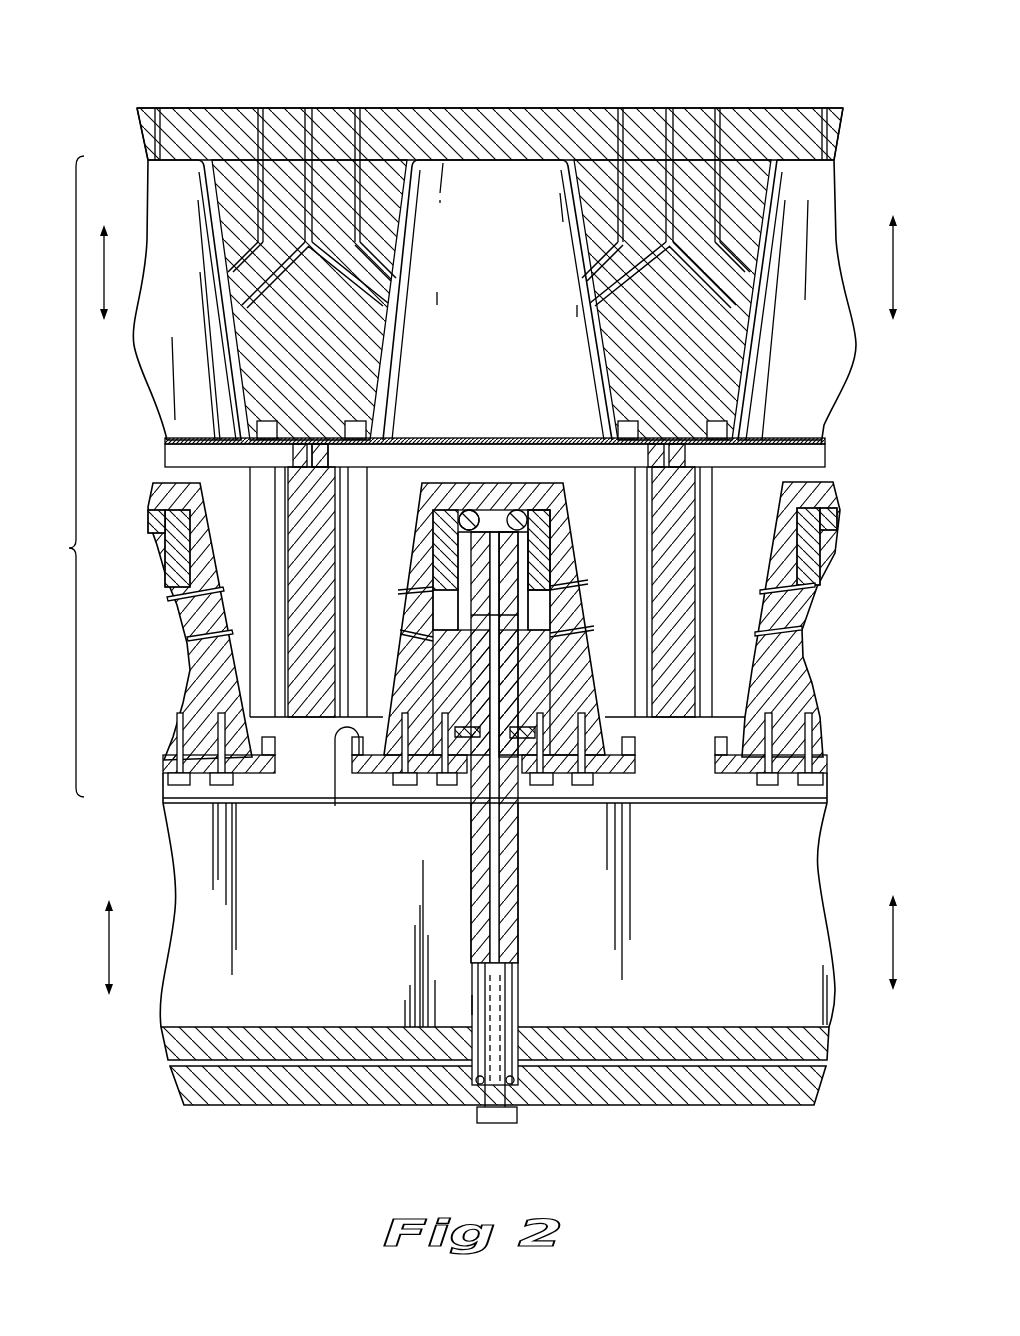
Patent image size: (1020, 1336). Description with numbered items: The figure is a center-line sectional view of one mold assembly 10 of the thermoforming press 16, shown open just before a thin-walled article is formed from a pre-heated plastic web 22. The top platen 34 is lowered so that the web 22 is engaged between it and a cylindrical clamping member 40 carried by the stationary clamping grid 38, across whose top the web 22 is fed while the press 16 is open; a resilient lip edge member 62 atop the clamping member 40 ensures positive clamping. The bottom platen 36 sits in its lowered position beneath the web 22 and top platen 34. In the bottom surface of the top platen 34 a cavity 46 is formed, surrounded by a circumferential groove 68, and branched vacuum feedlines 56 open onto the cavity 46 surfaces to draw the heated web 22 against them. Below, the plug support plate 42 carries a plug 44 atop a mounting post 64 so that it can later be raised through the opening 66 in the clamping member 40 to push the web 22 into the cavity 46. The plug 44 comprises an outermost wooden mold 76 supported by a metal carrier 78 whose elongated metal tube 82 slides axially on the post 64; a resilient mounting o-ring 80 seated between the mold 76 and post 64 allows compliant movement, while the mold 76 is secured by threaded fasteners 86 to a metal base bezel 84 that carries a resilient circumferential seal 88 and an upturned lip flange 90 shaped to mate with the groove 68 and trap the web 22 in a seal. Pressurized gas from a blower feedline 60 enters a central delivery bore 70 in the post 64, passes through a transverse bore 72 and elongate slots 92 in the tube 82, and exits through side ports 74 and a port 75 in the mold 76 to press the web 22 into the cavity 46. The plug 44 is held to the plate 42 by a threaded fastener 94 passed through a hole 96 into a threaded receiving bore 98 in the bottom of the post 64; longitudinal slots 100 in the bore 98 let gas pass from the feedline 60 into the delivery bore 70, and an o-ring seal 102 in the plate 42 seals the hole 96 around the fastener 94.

The mold assembly 10 is at (56, 476).
The press 16 is at (691, 45).
The web 22 is at (180, 439).
The top platen 34 is at (756, 108).
The bottom platen 36 is at (787, 889).
The clamping grid 38 is at (800, 453).
The clamping member 40 is at (310, 719).
The plug support plate 42 is at (697, 1103).
The plug 44 is at (634, 558).
The cavity 46 is at (568, 216).
The vacuum feedlines 56 is at (340, 130).
The blower feedlines 60 is at (688, 1050).
The lip edge member 62 is at (293, 448).
The mounting post 64 is at (473, 913).
The opening 66 is at (634, 682).
The circumferential groove 68 is at (330, 455).
The central delivery bore 70 is at (505, 940).
The transverse bore 72 is at (512, 612).
The side ports 74 is at (208, 593).
The port 75 is at (526, 482).
The wooden mold 76 is at (432, 577).
The metal carrier 78 is at (540, 683).
The mounting o-ring 80 is at (468, 508).
The metal tube 82 is at (545, 512).
The base bezel 84 is at (372, 806).
The threaded fasteners 86 is at (575, 787).
The circumferential seal 88 is at (465, 740).
The lip flange 90 is at (335, 806).
The elongate slots 92 is at (445, 636).
The threaded fastener 94 is at (498, 1125).
The hole 96 is at (513, 1110).
The threaded receiving bore 98 is at (513, 1003).
The longitudinal slots 100 is at (476, 1005).
The o-ring seal 102 is at (478, 1088).